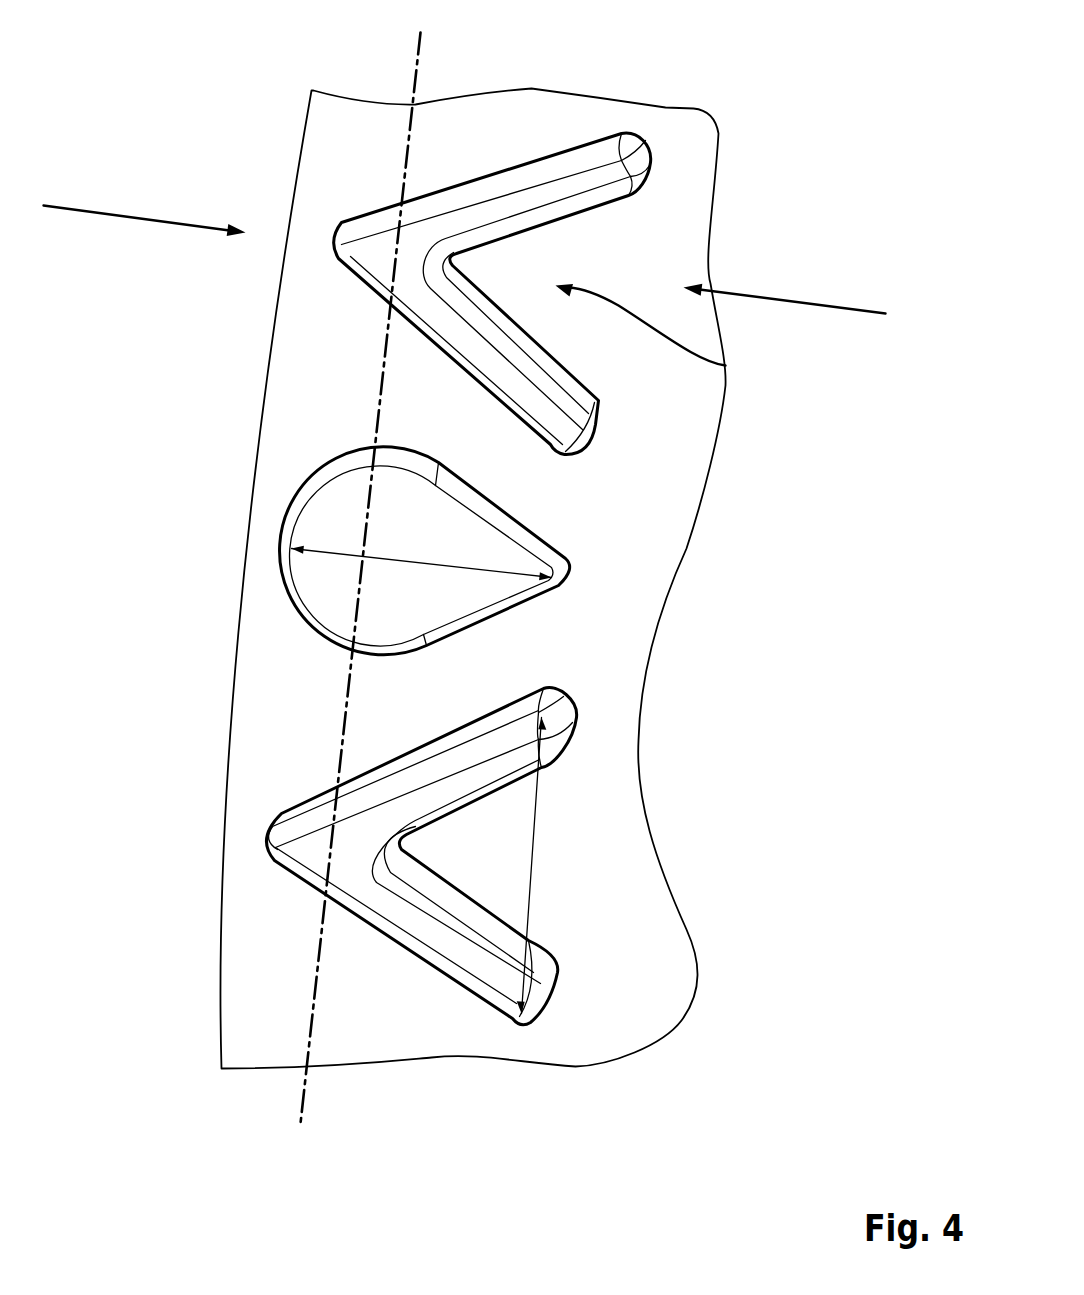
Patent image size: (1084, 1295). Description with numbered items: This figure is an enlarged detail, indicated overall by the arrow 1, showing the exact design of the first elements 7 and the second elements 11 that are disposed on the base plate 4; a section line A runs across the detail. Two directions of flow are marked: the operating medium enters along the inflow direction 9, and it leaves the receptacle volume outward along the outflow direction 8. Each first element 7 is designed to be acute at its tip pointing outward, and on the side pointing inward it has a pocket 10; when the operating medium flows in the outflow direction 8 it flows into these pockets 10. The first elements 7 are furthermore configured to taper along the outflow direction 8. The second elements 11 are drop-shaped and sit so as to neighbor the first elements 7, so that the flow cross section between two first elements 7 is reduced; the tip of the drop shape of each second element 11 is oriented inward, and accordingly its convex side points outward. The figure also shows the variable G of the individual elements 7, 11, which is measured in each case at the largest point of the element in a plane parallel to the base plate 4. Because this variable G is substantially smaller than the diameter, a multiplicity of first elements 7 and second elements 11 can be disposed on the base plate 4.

The structured component / assembly 1 is at (736, 72).
The base plate 4 is at (678, 160).
The first element 7 is at (508, 200).
The outflow direction 8 is at (814, 298).
The inflow direction 9 is at (106, 210).
The pocket 10 is at (718, 358).
The second element 11 is at (464, 546).
The variable G is at (464, 570).
The section line A- A is at (392, 33).